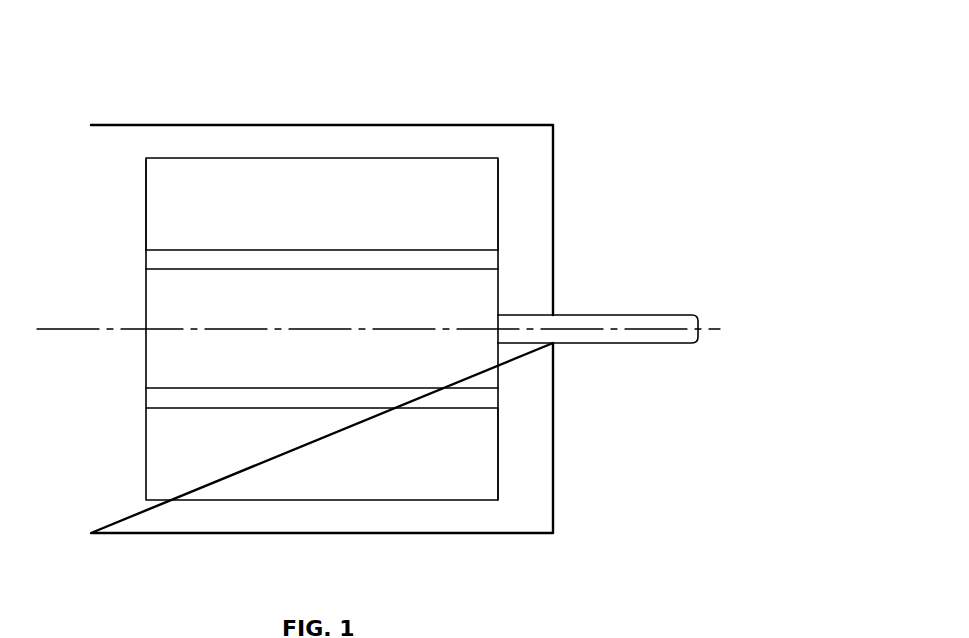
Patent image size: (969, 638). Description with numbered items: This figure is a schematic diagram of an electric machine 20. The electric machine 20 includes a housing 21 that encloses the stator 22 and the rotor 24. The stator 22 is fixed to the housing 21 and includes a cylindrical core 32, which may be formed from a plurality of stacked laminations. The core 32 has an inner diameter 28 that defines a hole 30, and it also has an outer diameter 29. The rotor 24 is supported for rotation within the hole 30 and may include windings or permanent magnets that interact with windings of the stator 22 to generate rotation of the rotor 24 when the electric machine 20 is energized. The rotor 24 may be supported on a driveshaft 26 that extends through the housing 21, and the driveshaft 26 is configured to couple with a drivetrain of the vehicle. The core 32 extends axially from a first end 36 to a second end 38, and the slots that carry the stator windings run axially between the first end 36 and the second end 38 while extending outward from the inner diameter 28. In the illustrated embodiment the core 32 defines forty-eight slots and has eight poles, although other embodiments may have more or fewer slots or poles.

The electric machine 20 is at (513, 47).
The housing 21 is at (323, 125).
The stator 22 is at (213, 157).
The rotor 24 is at (146, 303).
The driveshaft 26 is at (606, 315).
The inner diameter 28 is at (498, 261).
The outer diameter 29 is at (217, 500).
The hole 30 is at (513, 395).
The cylindrical core 32 is at (498, 204).
The first end 36 is at (146, 211).
The second end 38 is at (498, 450).